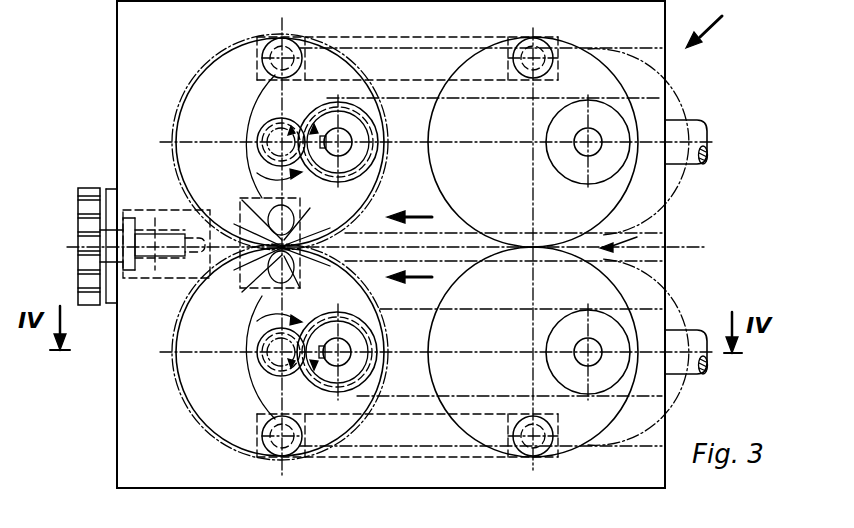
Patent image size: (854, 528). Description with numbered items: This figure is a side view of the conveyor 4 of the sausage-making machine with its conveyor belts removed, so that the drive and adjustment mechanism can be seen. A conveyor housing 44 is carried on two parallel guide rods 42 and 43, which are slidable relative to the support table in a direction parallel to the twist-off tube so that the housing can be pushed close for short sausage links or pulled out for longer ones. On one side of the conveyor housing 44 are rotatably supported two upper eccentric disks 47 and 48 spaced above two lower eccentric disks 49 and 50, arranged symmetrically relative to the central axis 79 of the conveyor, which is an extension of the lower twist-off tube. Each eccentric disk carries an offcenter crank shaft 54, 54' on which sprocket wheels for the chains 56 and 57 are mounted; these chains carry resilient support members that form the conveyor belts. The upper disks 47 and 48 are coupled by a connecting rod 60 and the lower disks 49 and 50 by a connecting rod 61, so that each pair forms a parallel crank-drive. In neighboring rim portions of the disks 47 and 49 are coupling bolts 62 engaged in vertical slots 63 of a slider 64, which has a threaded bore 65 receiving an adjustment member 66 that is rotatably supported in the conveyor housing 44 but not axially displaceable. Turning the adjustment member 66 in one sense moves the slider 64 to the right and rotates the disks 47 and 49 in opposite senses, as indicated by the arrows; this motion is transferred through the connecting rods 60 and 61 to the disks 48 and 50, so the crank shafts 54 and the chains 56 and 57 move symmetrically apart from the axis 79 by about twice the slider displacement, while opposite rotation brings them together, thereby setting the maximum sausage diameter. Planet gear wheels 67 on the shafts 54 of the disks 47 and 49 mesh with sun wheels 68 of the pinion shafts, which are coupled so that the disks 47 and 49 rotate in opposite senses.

The conveyor 4 is at (705, 29).
The guide rod 42 is at (689, 126).
The guide rod 43 is at (688, 337).
The conveyor housing 44 is at (657, 270).
The upper eccentric disk 47 is at (280, 142).
The upper eccentric disk 48 is at (533, 142).
The lower eccentric disk 49 is at (280, 352).
The lower eccentric disk 50 is at (533, 352).
The crank shaft 54 is at (363, 351).
The crank shaft 54' is at (547, 342).
The chain 56 is at (662, 183).
The chain 57 is at (391, 394).
The connecting rod 60 is at (445, 38).
The connecting rod 61 is at (414, 457).
The coupling bolt 62 is at (242, 200).
The vertical slot 63 is at (276, 220).
The slider 64 is at (167, 267).
The threaded bore 65 is at (171, 233).
The adjustment member 66 is at (91, 192).
The planet gear wheel 67 is at (325, 316).
The sun wheel 68 is at (259, 363).
The central axis 79 is at (631, 237).